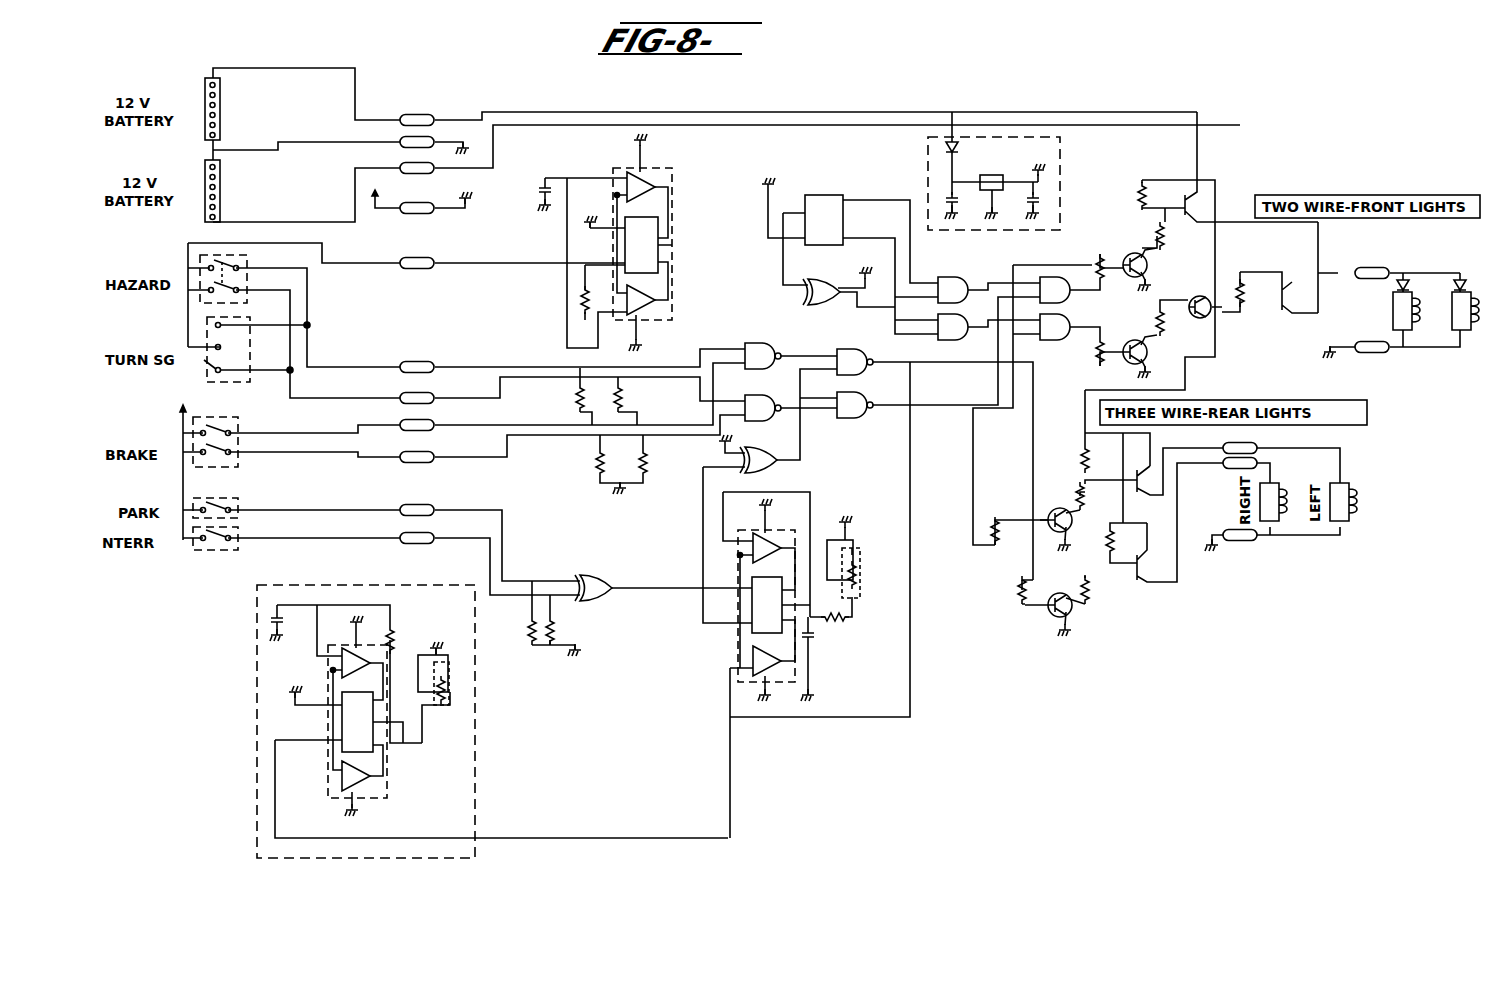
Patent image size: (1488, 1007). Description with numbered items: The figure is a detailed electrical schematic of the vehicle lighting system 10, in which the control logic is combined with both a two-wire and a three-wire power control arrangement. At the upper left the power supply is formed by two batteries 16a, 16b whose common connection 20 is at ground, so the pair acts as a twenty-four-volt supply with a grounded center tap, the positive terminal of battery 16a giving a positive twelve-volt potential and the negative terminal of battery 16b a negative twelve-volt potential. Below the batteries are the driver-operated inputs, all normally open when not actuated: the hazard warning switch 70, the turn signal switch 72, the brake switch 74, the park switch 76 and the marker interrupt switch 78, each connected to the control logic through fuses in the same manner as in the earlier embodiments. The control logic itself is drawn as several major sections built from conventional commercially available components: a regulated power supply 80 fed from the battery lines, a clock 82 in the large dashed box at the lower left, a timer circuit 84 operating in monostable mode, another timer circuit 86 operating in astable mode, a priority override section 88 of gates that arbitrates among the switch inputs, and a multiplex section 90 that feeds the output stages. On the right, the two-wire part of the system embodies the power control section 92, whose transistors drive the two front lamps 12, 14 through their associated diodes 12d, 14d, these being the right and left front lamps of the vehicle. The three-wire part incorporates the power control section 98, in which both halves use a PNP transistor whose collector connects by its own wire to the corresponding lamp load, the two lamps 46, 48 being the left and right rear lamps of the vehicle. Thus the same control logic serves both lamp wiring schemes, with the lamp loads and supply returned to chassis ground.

The system 10 is at (905, 797).
The lamp 12 is at (1474, 328).
The diode 12d is at (1464, 282).
The lamp 14 is at (1375, 314).
The diode 14d is at (1410, 283).
The battery 16a is at (222, 110).
The battery 16b is at (222, 187).
The common connection 20 is at (201, 150).
The lamp load 46 is at (1358, 506).
The lamp load 48 is at (1285, 502).
The hazard warning switch 70 is at (202, 303).
The turn signal switch 72 is at (207, 375).
The brake switch 74 is at (193, 467).
The park switch 76 is at (215, 500).
The marker interrupt switch 78 is at (217, 552).
The regulated power supply 80 is at (1062, 148).
The clock 82 is at (385, 862).
The timer circuit 84 is at (708, 658).
The timer circuit 86 is at (683, 178).
The priority override section 88 is at (828, 440).
The multiplex section 90 is at (935, 272).
The power control section 92 is at (1120, 230).
The power control section 98 is at (1135, 606).